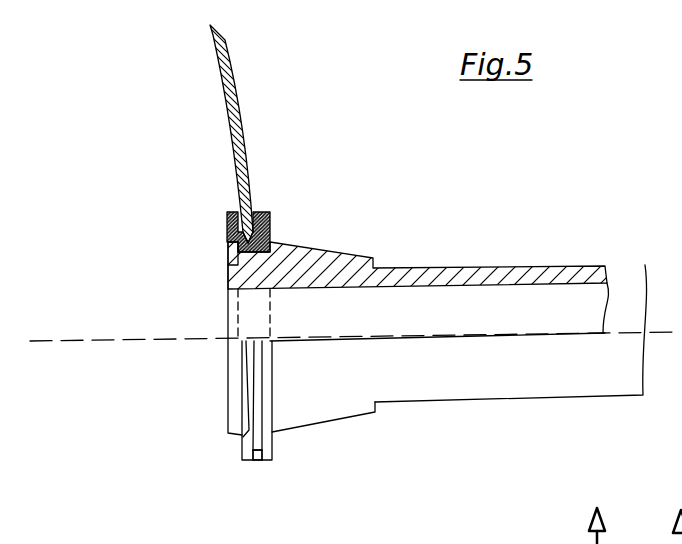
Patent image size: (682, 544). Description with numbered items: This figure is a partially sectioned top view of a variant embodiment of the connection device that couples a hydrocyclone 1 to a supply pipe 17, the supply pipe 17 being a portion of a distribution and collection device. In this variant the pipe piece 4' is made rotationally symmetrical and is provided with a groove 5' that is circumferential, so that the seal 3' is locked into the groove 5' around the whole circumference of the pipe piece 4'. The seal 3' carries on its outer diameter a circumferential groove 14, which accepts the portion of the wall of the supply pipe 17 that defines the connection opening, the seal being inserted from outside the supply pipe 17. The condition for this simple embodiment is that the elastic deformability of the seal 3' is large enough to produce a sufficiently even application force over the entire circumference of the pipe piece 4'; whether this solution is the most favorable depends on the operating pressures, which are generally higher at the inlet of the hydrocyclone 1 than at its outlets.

The hydrocyclone 1 is at (626, 260).
The seal 3' is at (245, 266).
The pipe piece 4' is at (350, 307).
The groove 5' is at (187, 243).
The circumferential groove 14 is at (254, 458).
The supply pipe 17 is at (222, 71).